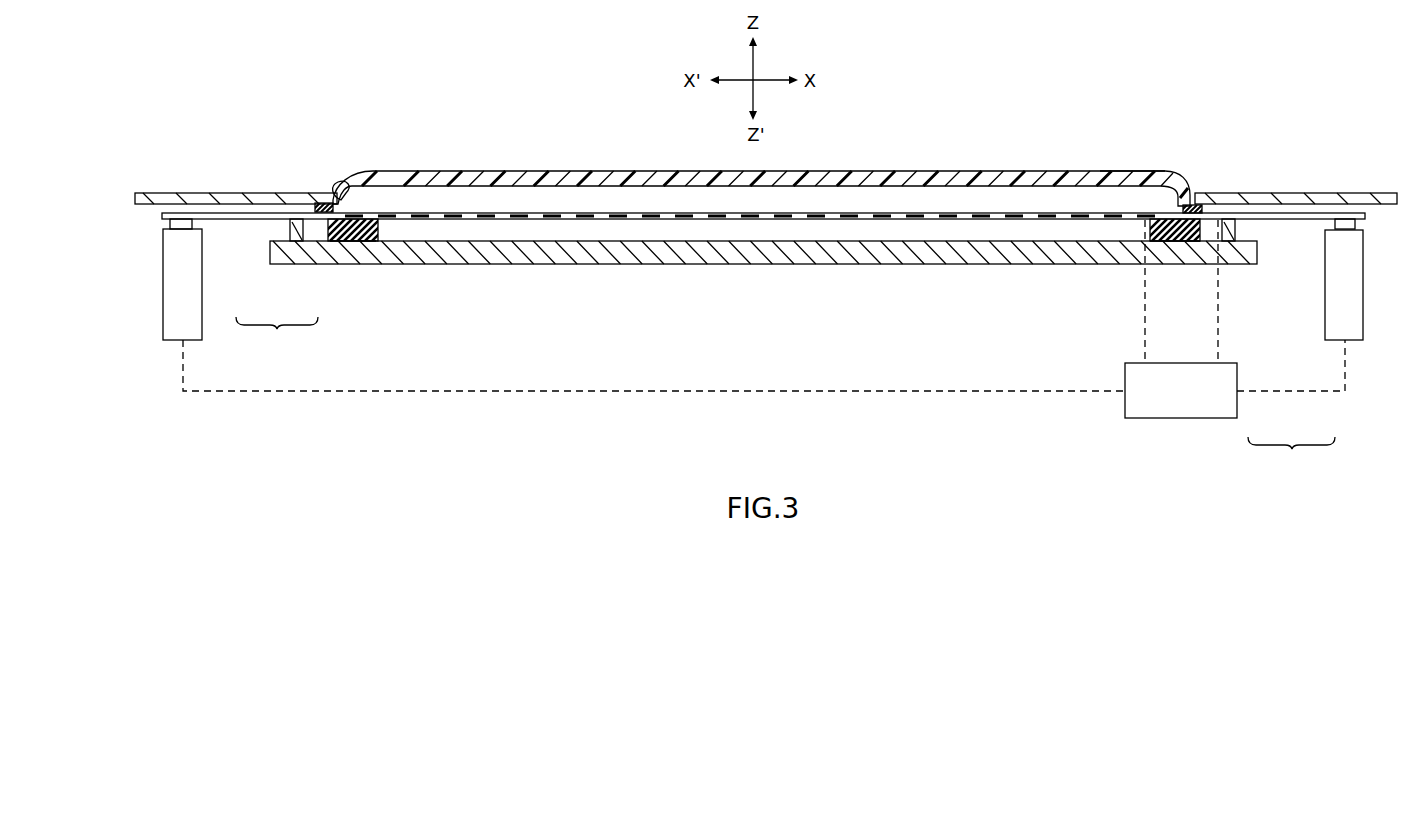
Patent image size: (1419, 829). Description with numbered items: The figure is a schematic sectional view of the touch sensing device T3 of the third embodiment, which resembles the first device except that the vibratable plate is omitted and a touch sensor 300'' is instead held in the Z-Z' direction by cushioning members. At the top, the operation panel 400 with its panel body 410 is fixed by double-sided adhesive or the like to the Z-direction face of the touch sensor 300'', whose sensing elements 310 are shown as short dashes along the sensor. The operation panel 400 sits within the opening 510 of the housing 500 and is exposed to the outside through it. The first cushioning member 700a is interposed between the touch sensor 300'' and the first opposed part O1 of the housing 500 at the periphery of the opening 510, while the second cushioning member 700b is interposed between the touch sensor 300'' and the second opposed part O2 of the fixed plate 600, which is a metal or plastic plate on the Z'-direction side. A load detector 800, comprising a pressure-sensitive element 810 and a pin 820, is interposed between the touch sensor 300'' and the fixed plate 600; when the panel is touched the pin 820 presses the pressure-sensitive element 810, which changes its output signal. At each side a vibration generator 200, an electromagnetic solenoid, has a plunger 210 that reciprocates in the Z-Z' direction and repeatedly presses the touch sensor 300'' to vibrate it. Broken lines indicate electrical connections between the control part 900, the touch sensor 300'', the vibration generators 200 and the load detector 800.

The touch sensing device T3 is at (176, 79).
The vibration generator 200 is at (165, 295).
The plunger 210 is at (182, 224).
The touch sensor 300'' is at (763, 177).
The sensing electrodes 310 is at (420, 216).
The operation panel 400 is at (690, 178).
The panel body 410 is at (887, 181).
The housing 500 is at (274, 197).
The opening 510 is at (340, 197).
The fixed plate 600 is at (752, 248).
The first cushioning member 700a is at (1195, 208).
The second cushioning member 700b is at (1172, 241).
The load detector 800 is at (785, 394).
The pressure-sensitive element 810 is at (287, 222).
The pin 820 is at (300, 240).
The control part 900 is at (1181, 390).
The first opposed part O1 is at (322, 203).
The second opposed part O2 is at (357, 246).